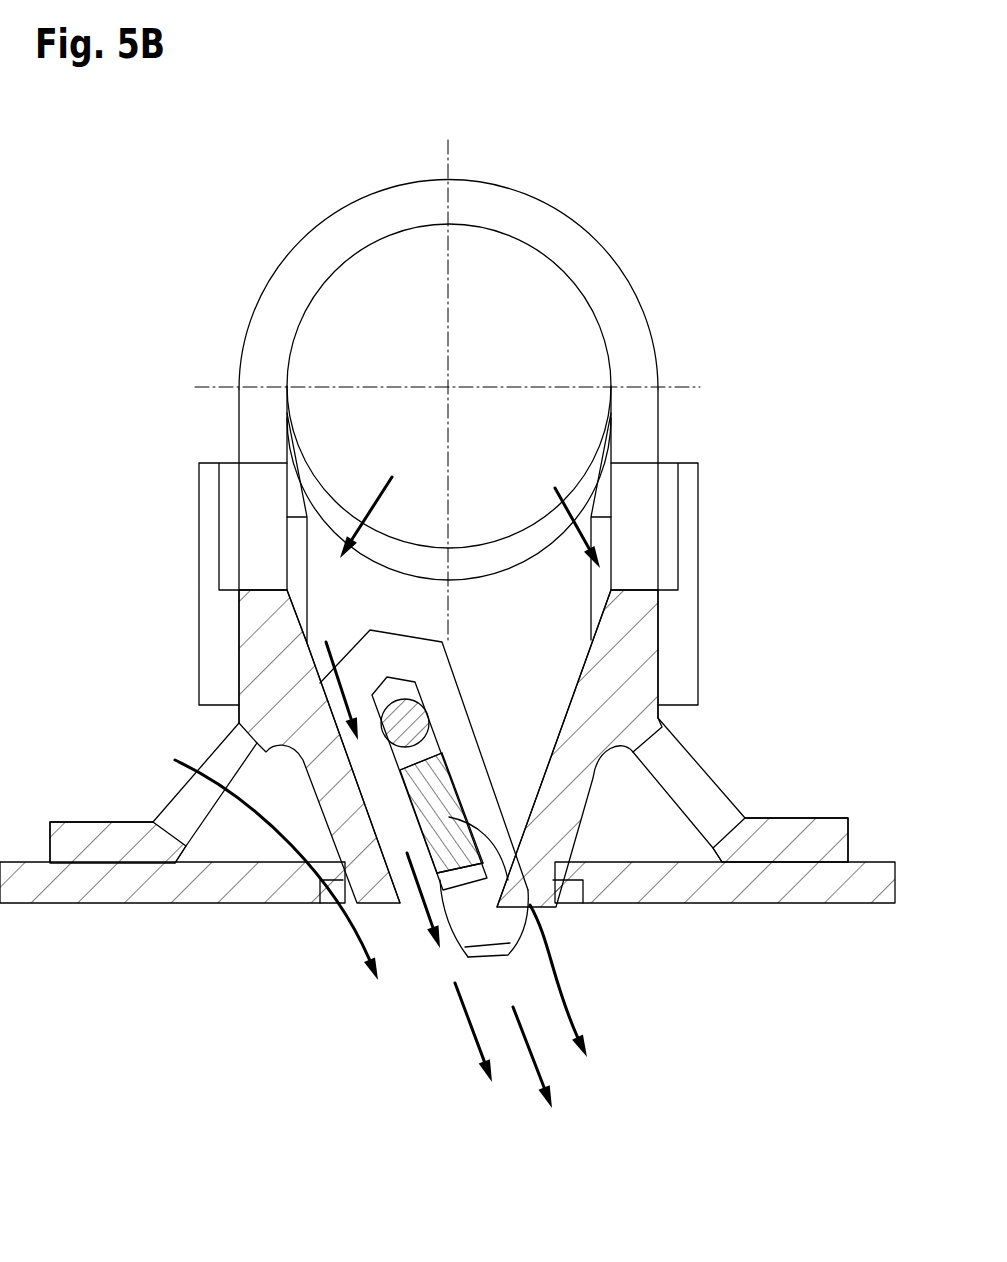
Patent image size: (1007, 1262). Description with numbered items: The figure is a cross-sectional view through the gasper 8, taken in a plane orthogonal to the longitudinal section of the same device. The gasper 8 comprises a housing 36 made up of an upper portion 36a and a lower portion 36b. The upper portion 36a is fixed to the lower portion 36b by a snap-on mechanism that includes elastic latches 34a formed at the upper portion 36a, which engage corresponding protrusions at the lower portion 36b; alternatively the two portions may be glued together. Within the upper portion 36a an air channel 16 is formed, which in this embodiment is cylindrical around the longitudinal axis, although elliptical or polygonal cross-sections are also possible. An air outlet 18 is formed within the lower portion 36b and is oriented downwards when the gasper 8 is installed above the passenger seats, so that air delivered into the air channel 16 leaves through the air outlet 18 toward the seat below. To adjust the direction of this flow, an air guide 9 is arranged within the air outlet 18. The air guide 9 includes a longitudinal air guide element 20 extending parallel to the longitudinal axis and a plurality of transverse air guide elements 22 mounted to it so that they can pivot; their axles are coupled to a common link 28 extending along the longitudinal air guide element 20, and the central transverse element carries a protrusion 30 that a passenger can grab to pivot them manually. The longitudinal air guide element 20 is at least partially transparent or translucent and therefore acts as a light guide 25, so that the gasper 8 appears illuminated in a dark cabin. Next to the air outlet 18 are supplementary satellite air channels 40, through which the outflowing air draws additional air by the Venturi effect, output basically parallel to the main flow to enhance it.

The gasper 8 is at (592, 183).
The air guide 9 is at (352, 630).
The light guide 25 is at (579, 748).
The air channel 16 is at (532, 308).
The air outlet 18 is at (527, 703).
The longitudinal air guide element 20 is at (520, 905).
The transverse air guide elements 22 is at (448, 905).
The common link 28 is at (388, 743).
The protrusion 30 is at (494, 975).
The elastic latches 34a is at (175, 545).
The housing 36 is at (680, 366).
The upper portion 36a is at (503, 160).
The lower portion 36b is at (730, 716).
The satellite air channels 40 is at (168, 792).